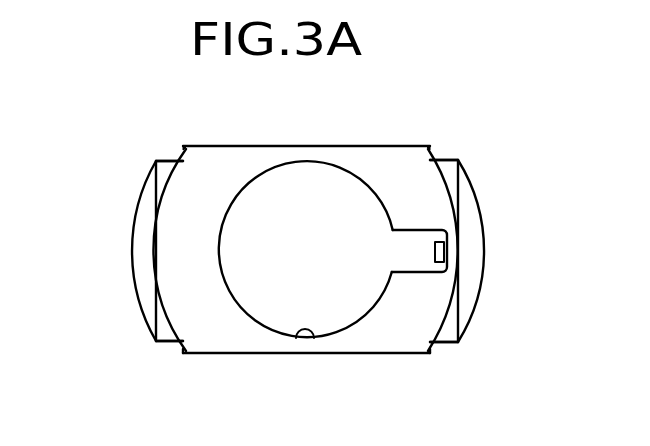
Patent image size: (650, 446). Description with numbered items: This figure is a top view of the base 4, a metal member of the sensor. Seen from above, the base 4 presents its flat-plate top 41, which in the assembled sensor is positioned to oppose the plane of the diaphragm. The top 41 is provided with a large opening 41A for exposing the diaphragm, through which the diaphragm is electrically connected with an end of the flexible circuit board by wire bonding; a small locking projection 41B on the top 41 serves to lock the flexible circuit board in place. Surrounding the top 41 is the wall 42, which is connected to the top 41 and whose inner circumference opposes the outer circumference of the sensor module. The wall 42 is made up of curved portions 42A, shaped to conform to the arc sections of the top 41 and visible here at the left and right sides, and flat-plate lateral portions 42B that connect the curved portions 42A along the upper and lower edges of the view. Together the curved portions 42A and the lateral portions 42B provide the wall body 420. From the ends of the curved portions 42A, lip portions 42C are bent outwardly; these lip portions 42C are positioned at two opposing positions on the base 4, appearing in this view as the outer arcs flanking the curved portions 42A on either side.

The base 4 is at (443, 136).
The top 41 is at (225, 146).
The opening 41A is at (312, 340).
The locking projection 41B is at (443, 245).
The wall 42 is at (181, 367).
The curved portions 42A is at (453, 183).
The lateral portions 42B is at (315, 146).
The lip portions 42C is at (460, 312).
The wall body 420 is at (383, 355).